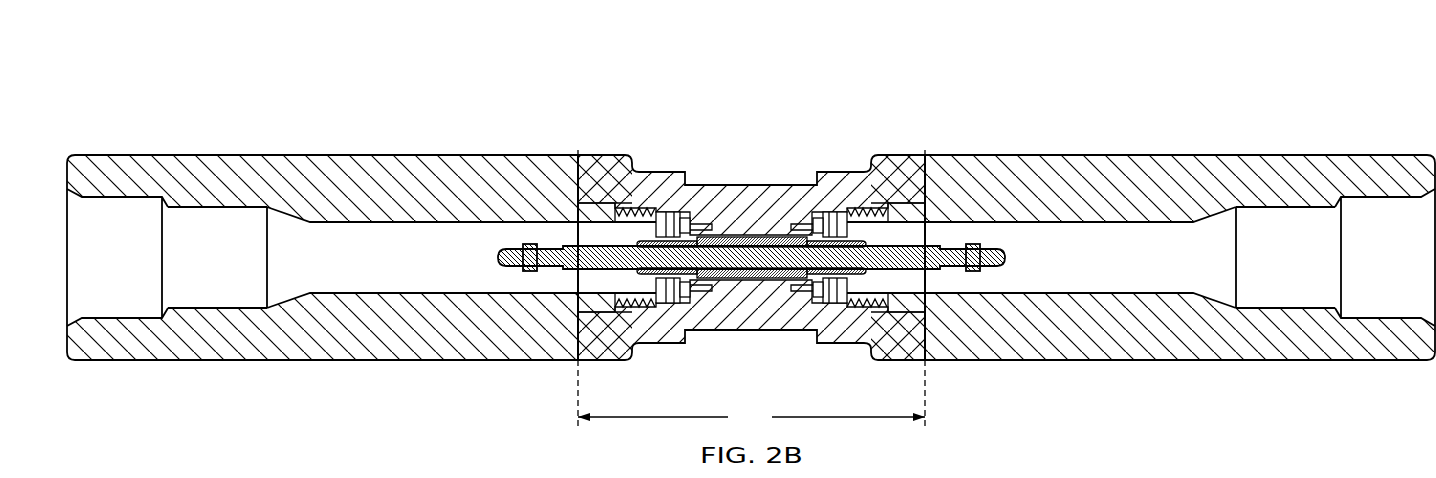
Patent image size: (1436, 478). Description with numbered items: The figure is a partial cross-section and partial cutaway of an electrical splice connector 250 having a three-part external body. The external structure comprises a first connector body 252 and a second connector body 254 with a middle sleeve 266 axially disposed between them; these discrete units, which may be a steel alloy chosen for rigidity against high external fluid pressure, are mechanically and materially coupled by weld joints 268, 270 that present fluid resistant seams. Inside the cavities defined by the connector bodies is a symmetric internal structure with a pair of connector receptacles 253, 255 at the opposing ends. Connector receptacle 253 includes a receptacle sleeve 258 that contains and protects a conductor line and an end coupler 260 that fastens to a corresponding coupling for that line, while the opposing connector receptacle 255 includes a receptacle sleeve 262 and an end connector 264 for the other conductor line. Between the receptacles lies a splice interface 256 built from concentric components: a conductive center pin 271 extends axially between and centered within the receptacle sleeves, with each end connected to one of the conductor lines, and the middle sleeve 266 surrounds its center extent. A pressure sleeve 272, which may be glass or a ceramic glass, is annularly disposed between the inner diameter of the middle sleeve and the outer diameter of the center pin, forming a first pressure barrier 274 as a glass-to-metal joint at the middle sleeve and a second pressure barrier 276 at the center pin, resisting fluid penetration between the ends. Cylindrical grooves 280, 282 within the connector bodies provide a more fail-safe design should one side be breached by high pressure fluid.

The electrical splice connector 250 is at (751, 210).
The first connector body 252 is at (500, 185).
The connector receptacle 253 is at (216, 197).
The second connector body 254 is at (1005, 180).
The connector receptacle 255 is at (1288, 197).
The splice interface 256 is at (751, 290).
The receptacle sleeve 258 is at (410, 240).
The end coupler 260 is at (123, 205).
The receptacle sleeve 262 is at (1094, 240).
The end connector 264 is at (1381, 205).
The middle sleeve 266 is at (737, 195).
The weld joint 268 is at (617, 200).
The weld joint 270 is at (921, 177).
The center pin 271 is at (600, 268).
The pressure sleeve 272 is at (722, 280).
The first pressure barrier 274 is at (720, 236).
The second pressure barrier 276 is at (780, 280).
The cylindrical groove 280 is at (703, 222).
The cylindrical groove 282 is at (802, 222).